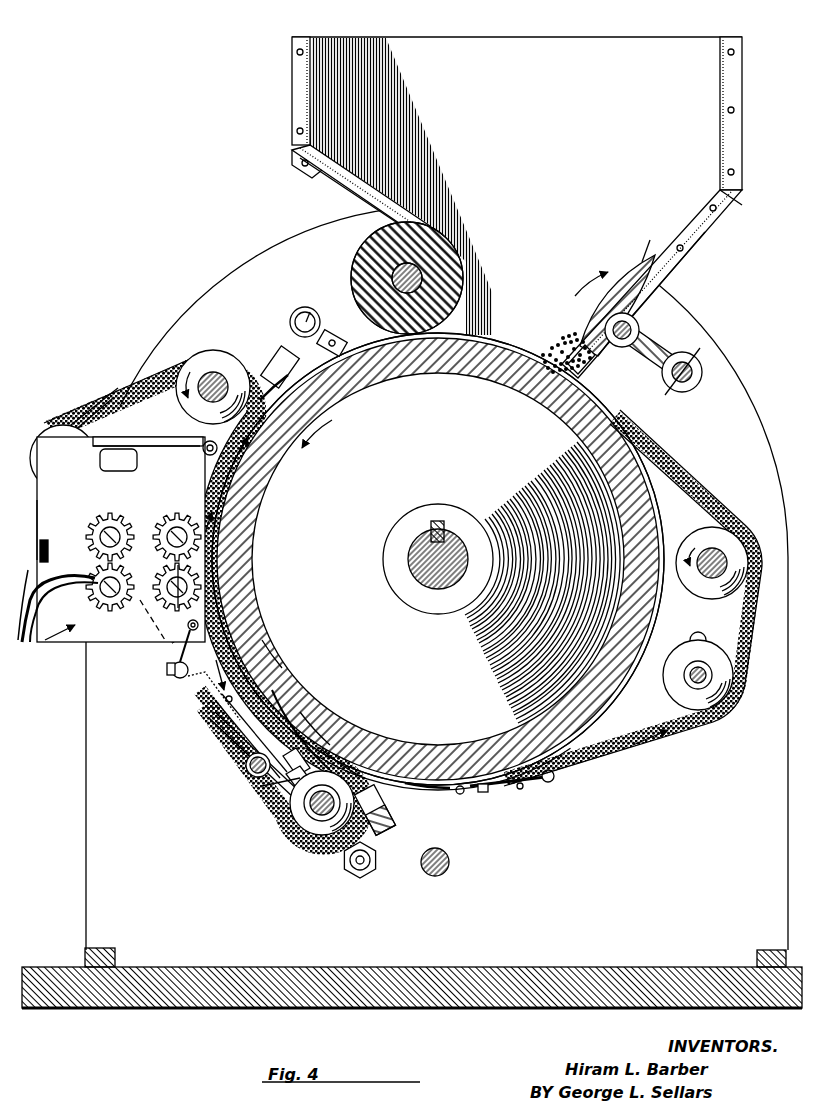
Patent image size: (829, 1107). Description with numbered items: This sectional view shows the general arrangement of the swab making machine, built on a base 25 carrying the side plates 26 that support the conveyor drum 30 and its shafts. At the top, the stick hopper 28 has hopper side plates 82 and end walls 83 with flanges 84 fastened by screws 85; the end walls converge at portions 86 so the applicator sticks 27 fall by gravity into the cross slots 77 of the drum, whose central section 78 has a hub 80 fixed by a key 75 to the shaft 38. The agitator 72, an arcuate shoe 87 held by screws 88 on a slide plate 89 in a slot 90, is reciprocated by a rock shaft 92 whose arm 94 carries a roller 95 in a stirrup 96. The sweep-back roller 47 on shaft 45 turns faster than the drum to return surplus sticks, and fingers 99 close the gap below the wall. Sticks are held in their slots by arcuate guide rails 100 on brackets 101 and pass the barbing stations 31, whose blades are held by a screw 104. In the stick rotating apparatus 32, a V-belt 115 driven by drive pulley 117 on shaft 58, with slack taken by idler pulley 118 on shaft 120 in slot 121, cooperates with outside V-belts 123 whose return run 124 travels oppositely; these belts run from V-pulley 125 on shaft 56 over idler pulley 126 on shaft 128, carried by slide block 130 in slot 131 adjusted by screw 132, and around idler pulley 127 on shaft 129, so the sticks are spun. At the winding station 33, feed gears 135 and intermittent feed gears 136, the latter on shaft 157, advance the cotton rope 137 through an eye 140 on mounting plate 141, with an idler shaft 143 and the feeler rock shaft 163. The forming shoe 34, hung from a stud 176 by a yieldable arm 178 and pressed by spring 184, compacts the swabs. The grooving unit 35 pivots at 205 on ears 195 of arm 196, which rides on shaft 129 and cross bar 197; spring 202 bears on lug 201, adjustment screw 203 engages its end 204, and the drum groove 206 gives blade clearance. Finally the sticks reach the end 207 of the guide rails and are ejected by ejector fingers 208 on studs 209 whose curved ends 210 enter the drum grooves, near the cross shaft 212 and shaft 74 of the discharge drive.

The base 25 is at (236, 975).
The side plates 26 is at (298, 240).
The applicator sticks 27 is at (520, 350).
The stick hopper 28 is at (683, 66).
The conveyor drum 30 is at (402, 350).
The barbing stations 31 is at (306, 306).
The stick rotating apparatus 32 is at (150, 374).
The winding station 33 is at (40, 643).
The forming shoe 34 is at (170, 672).
The grooving unit 35 is at (288, 686).
The shaft 38 is at (458, 540).
The shaft 45 is at (425, 278).
The sweep-back roller 47 is at (440, 252).
The shaft 56 is at (215, 380).
The shaft 58 is at (728, 565).
The stick agitator 72 is at (645, 260).
The shaft 74 is at (368, 866).
The key 75 is at (430, 525).
The cross slots 77 is at (450, 345).
The central section 78 is at (526, 385).
The hub 80 is at (414, 578).
The hopper side plates 82 is at (486, 52).
The end walls 83 is at (307, 96).
The flanges 84 is at (300, 66).
The screws 85 is at (297, 133).
The converging portions 86 is at (356, 185).
The arcuate shoe 87 is at (592, 285).
The screws 88 is at (636, 268).
The slide plate 89 is at (592, 352).
The slot 90 is at (660, 283).
The rock shaft 92 is at (700, 380).
The arm 94 is at (660, 352).
The roller 95 is at (634, 322).
The stirrup 96 is at (627, 345).
The fingers 99 is at (392, 205).
The arcuate guide rails 100 is at (443, 790).
The brackets 101 is at (380, 808).
The screw 104 is at (335, 336).
The V-belt 115 is at (690, 490).
The drive pulley 117 is at (722, 540).
The idler pulley 118 is at (710, 705).
The shaft 120 is at (713, 674).
The slot 121 is at (698, 636).
The outside V-belts 123 is at (125, 395).
The return run 124 is at (203, 458).
The V-pulley 125 is at (218, 360).
The idler pulley 126 is at (57, 440).
The idler pulley 127 is at (322, 835).
The shaft 128 is at (86, 401).
The shaft 129 is at (316, 812).
The slide block 130 is at (110, 440).
The slot 131 is at (125, 445).
The screw 132 is at (127, 452).
The feed gears 135 is at (176, 515).
The intermittent feed gears 136 is at (110, 515).
The cotton rope 137 is at (34, 606).
The eye 140 is at (60, 541).
The mounting plate 141 is at (48, 522).
The idler shaft 143 is at (150, 610).
The shaft 157 is at (77, 634).
The rock shaft 163 is at (205, 442).
The stud 176 is at (178, 678).
The vertical arm 178 is at (182, 634).
The spring 184 is at (206, 695).
The ears 195 is at (292, 775).
The arm 196 is at (298, 790).
The cross bar 197 is at (246, 766).
The lug 201 is at (240, 742).
The spring 202 is at (228, 724).
The adjustment screw 203 is at (305, 800).
The end 204 is at (338, 742).
The pivot 205 is at (312, 712).
The groove 206 is at (270, 654).
The end 207 is at (466, 800).
The ejector fingers 208 is at (530, 794).
The studs 209 is at (552, 782).
The curved ends 210 is at (490, 796).
The cross shaft 212 is at (447, 870).